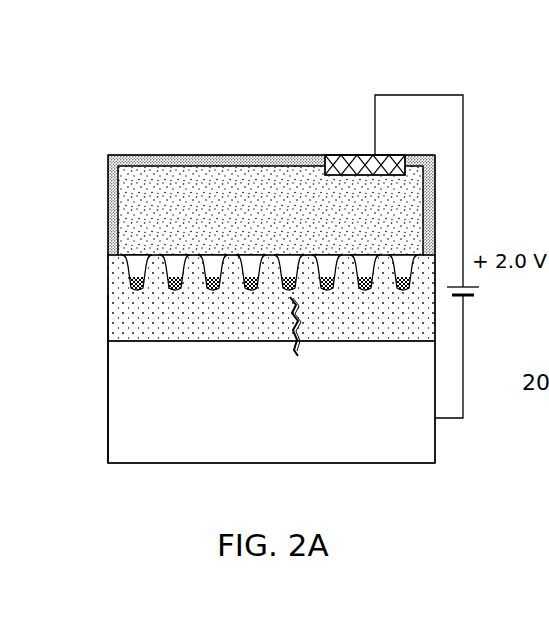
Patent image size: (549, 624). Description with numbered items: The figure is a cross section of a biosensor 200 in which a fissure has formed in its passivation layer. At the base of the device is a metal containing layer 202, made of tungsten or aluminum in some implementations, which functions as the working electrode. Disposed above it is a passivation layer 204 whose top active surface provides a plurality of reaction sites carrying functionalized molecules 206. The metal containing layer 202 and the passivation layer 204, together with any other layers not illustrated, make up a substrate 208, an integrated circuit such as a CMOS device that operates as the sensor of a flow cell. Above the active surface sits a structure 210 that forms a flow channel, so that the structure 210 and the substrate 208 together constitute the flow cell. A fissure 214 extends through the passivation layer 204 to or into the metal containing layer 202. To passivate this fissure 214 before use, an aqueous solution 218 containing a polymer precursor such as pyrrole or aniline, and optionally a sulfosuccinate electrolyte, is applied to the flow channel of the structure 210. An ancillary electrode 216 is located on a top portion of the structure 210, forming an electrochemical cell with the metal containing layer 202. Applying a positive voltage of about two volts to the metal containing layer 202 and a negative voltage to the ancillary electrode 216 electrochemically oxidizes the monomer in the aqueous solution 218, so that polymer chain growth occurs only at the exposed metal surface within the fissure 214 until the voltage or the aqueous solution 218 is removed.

The biosensor 200 is at (153, 68).
The metal containing layer 202 is at (167, 388).
The passivation layer 204 is at (167, 330).
The functionalized molecules 206 is at (252, 273).
The substrate 208 is at (95, 295).
The structure 210 is at (428, 155).
The fissure 214 is at (298, 357).
The ancillary electrode 216 is at (343, 154).
The aqueous solution 218 is at (398, 217).